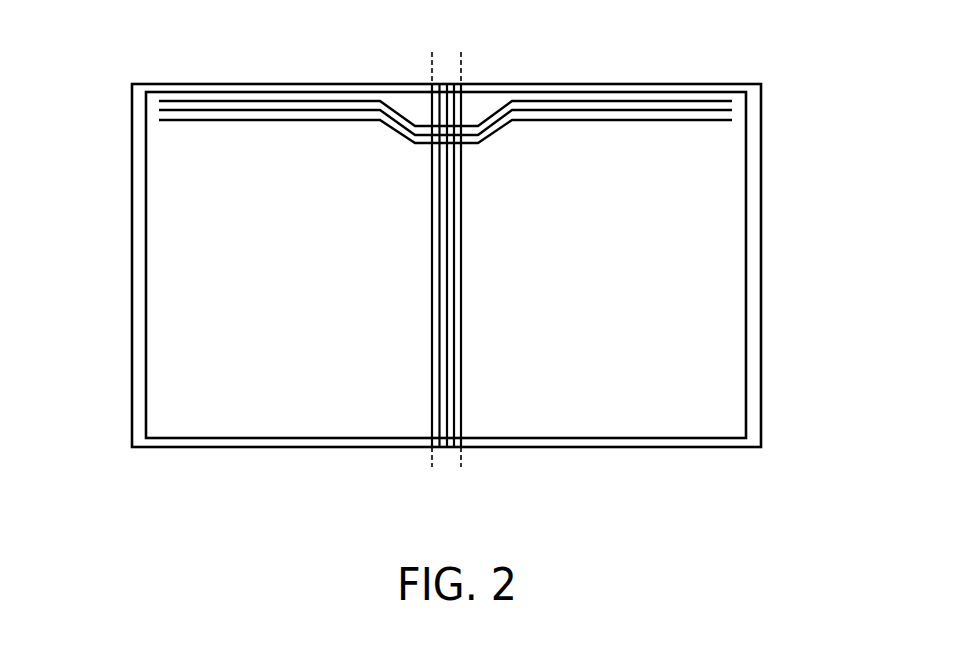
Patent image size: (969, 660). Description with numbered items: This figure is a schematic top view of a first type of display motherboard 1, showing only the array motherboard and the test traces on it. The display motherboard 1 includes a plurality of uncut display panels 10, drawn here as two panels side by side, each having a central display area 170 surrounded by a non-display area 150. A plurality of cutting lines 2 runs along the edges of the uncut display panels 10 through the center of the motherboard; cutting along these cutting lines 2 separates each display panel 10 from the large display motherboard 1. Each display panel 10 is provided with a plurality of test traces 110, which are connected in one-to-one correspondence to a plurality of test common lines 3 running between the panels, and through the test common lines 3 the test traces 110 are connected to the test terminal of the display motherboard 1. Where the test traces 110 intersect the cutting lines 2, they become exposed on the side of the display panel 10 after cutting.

The display motherboard 1 is at (132, 95).
The uncut display panel 10 is at (160, 224).
The test traces 110 is at (258, 100).
The cutting lines 2 is at (432, 52).
The test common lines 3 is at (433, 452).
The non-display area 150 is at (172, 305).
The display area 170 is at (290, 305).